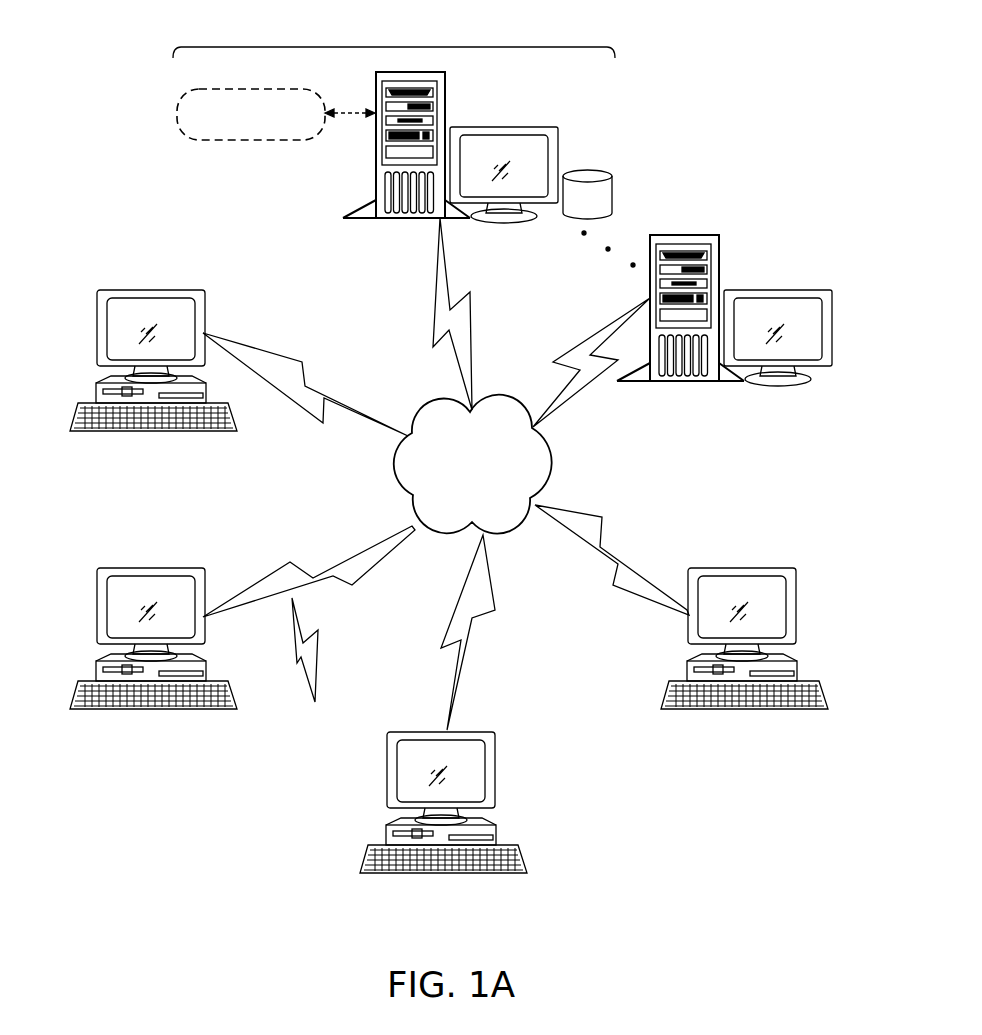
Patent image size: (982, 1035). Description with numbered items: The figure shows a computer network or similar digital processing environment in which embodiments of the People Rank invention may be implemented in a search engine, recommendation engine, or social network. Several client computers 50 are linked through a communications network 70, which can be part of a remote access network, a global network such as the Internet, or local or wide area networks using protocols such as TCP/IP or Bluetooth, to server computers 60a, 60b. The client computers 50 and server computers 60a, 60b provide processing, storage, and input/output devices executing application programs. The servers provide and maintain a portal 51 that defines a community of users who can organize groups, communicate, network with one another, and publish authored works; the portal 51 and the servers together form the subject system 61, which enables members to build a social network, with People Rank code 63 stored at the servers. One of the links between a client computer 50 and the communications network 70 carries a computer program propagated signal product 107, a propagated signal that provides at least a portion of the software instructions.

The client computer 50 is at (151, 290).
The portal 51 is at (177, 90).
The server computer 60a is at (502, 127).
The server computer 60b is at (781, 292).
The subject system 61 is at (394, 36).
The People Rank code 63 is at (613, 191).
The communications network 70 is at (485, 499).
The computer program propagated signal product 107 is at (318, 672).